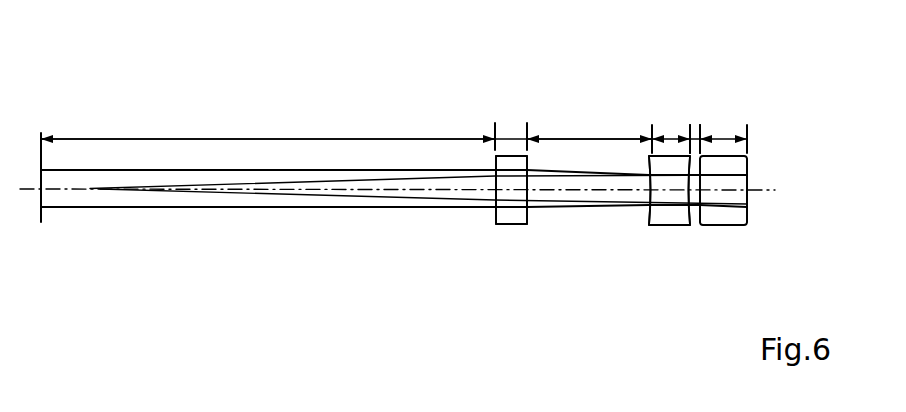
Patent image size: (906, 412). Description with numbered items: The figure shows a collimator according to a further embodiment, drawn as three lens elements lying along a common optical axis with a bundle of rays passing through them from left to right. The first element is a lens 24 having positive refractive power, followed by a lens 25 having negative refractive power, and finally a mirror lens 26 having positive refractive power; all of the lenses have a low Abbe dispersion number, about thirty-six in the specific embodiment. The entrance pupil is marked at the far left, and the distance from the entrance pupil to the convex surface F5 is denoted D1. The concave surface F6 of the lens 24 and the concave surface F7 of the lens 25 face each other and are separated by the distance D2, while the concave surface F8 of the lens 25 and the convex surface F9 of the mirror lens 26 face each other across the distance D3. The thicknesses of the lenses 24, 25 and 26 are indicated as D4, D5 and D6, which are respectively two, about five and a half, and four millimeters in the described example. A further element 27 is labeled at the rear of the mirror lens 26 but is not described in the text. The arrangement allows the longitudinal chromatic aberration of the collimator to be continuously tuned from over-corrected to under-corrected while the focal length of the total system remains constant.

The distance from entrance pupil to surface F5 D1 is at (268, 122).
The distance between surfaces F6 and F7 D2 is at (589, 124).
The distance between surfaces F8 and F9 D3 is at (695, 125).
The thickness of lens 24 D4 is at (510, 135).
The thickness of lens 25 D5 is at (672, 138).
The thickness of mirror lens 26 D6 is at (727, 135).
The lens 24 is at (508, 224).
The lens 25 is at (670, 226).
The mirror lens 26 is at (721, 227).
The exit surface of third lens 27 is at (750, 222).
The convex surface F5 is at (494, 224).
The concave surface F6 is at (529, 224).
The concave surface F7 is at (647, 225).
The concave surface F8 is at (696, 222).
The convex surface F9 is at (702, 185).